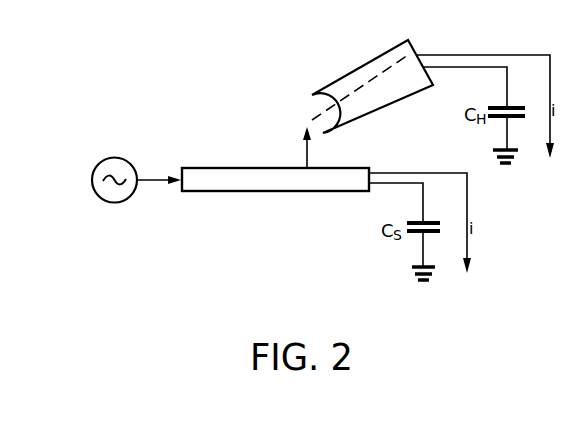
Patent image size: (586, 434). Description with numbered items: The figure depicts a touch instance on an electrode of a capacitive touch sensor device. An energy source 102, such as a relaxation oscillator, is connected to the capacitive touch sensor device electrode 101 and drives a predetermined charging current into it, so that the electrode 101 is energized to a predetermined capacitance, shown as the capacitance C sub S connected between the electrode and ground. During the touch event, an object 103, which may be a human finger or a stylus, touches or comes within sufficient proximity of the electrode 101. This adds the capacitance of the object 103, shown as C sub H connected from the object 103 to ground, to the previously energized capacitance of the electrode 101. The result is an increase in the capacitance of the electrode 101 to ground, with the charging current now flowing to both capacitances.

The capacitive touch sensor device electrode 101 is at (215, 168).
The energy source 102 is at (114, 157).
The object 103 is at (377, 57).